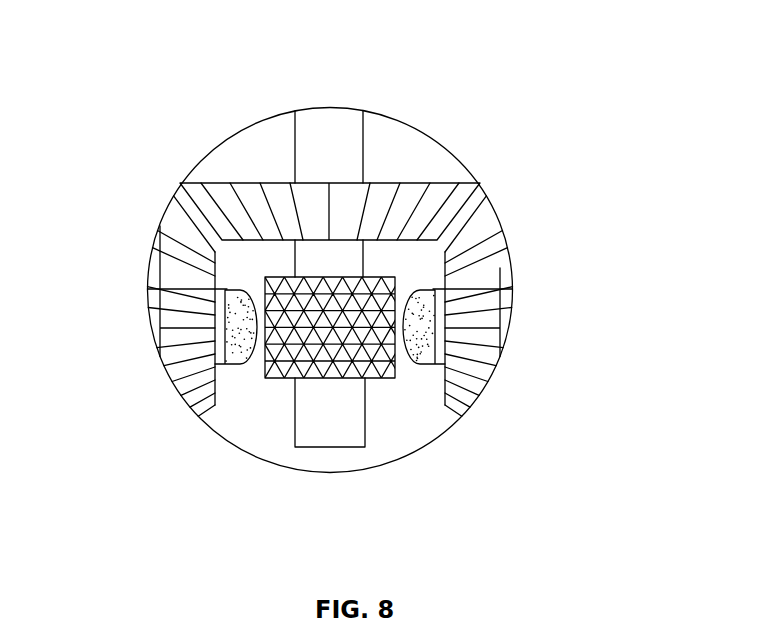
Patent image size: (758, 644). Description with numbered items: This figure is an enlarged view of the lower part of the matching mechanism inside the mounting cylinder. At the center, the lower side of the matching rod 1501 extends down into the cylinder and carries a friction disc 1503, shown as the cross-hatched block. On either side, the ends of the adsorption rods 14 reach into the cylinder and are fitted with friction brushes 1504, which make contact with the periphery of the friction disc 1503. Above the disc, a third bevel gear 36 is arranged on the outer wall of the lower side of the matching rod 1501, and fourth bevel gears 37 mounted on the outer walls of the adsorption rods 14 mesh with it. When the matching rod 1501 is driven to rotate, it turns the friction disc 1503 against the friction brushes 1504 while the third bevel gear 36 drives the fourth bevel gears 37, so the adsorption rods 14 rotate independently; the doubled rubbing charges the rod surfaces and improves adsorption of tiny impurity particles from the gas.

The adsorption rod 14 is at (153, 305).
The third bevel gear 36 is at (262, 210).
The fourth bevel gear 37 is at (197, 343).
The matching rod 1501 is at (327, 134).
The friction disc 1503 is at (330, 346).
The friction brush 1504 is at (422, 332).